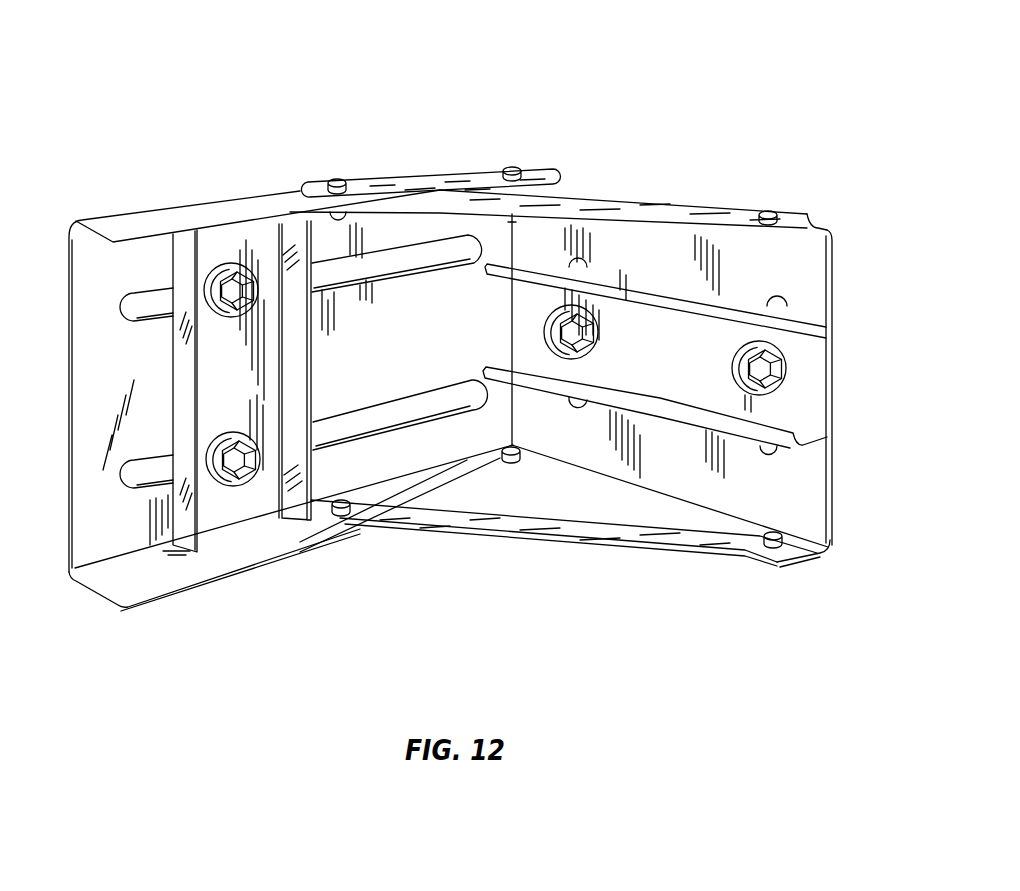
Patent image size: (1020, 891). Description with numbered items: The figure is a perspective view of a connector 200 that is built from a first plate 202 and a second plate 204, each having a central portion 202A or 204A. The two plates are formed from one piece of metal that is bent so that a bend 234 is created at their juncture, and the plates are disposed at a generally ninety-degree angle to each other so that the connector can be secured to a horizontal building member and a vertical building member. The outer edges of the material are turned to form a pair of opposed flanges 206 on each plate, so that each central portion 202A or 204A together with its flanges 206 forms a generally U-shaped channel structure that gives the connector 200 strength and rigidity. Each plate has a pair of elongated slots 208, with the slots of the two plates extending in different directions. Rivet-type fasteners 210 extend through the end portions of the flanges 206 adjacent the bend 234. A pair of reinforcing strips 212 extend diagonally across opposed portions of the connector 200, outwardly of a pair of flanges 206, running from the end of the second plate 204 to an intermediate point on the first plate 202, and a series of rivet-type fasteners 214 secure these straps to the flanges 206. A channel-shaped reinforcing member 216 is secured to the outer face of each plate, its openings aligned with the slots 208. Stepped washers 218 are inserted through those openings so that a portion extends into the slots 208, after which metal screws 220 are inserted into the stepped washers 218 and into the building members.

The connector 200 is at (645, 93).
The first plate 202 is at (66, 262).
The central portion of the first plate 202A is at (483, 322).
The second plate 204 is at (833, 273).
The central portion of the second plate 204A is at (740, 258).
The flanges 206 is at (281, 205).
The elongated slots 208 is at (157, 290).
The fasteners 210 is at (508, 167).
The reinforcing strip 212 is at (660, 213).
The fasteners 214 is at (340, 181).
The reinforcing member 216 is at (232, 243).
The stepped washers 218 is at (210, 465).
The screws 220 is at (256, 467).
The bend 234 is at (514, 230).